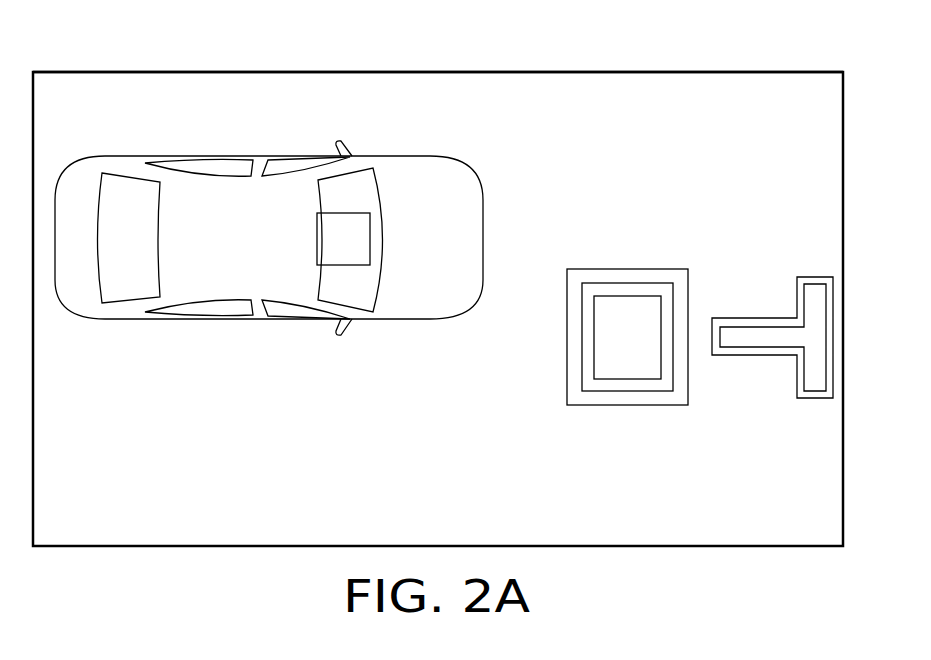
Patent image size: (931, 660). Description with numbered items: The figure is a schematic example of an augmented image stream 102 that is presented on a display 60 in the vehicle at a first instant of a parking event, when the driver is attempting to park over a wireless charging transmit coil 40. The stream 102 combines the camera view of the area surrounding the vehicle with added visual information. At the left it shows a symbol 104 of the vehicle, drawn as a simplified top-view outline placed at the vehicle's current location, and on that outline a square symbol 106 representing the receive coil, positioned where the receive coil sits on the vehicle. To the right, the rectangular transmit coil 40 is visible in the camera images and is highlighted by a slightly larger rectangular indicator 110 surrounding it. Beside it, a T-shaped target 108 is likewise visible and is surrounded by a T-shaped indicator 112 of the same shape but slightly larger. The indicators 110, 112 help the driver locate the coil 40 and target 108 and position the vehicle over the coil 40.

The display 60 is at (710, 72).
The augmented image stream 102 is at (565, 87).
The symbol of the vehicle 104 is at (140, 172).
The symbol of the receive coil 106 is at (317, 238).
The indicator 110 is at (608, 275).
The transmit coil 40 is at (644, 302).
The indicator 112 is at (815, 280).
The target 108 is at (815, 310).